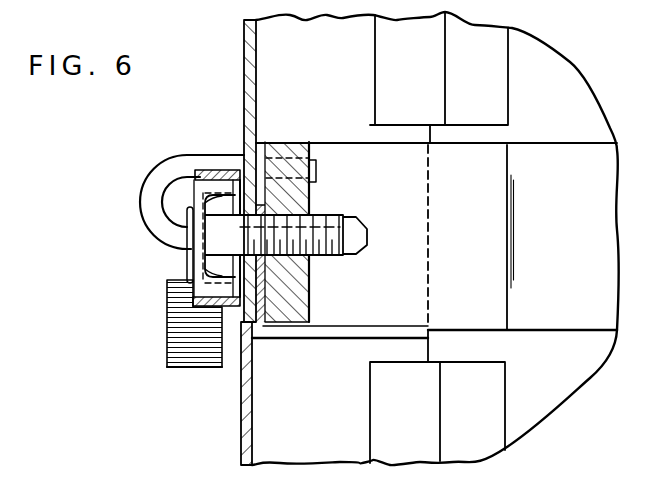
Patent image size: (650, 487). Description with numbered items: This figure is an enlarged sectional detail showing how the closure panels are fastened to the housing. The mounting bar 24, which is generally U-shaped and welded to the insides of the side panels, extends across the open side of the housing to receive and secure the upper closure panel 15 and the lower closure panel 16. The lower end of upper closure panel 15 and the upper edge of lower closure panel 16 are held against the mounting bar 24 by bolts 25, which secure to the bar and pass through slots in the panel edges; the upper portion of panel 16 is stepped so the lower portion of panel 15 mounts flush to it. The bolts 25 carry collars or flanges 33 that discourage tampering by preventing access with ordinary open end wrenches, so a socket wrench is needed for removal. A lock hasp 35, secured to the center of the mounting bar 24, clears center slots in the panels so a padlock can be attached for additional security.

The upper closure panel 15 is at (244, 74).
The lower closure panel 16 is at (241, 424).
The mounting bar 24 is at (310, 189).
The bolts 25 is at (340, 215).
The collars or flanges 33 is at (220, 170).
The lock hasp 35 is at (153, 178).